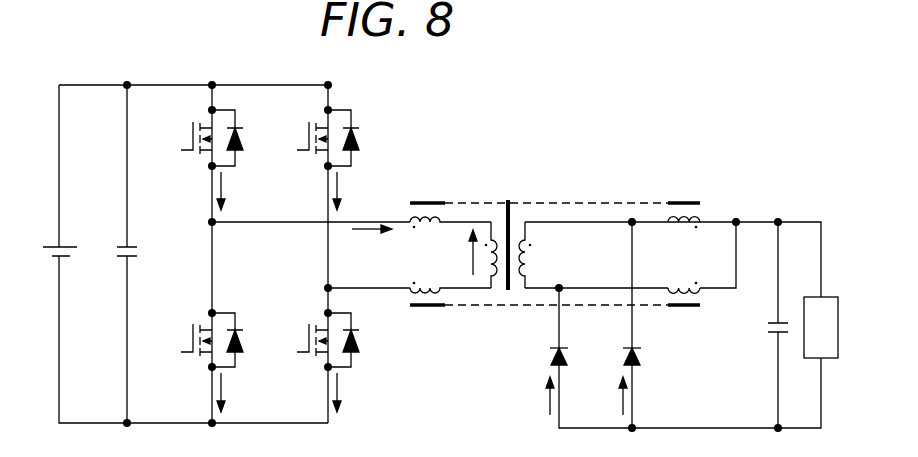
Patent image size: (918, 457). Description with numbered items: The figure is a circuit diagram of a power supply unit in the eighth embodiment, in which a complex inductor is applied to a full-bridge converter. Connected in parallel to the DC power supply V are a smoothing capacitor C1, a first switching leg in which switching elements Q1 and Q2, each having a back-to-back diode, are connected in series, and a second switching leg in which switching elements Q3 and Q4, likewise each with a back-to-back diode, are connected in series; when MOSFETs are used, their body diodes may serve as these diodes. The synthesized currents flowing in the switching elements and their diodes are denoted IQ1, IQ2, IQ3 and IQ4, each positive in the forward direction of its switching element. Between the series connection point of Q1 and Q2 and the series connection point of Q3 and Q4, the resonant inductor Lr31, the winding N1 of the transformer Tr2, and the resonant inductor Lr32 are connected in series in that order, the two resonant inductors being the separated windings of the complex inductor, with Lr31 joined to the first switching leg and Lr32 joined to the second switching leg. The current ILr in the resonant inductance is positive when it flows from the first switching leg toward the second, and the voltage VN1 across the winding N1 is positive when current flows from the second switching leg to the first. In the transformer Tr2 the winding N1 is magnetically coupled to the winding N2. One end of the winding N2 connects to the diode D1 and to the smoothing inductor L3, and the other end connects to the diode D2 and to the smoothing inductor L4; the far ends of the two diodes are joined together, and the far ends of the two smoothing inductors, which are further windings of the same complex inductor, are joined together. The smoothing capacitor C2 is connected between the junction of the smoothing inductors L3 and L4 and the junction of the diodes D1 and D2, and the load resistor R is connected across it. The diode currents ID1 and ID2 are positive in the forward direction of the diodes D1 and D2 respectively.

The DC power supply V is at (49, 251).
The smoothing capacitor C1 is at (141, 254).
The switching element Q1 is at (199, 138).
The switching element Q2 is at (199, 340).
The switching element Q3 is at (315, 138).
The switching element Q4 is at (315, 340).
The synthesized current IQ1 is at (239, 191).
The synthesized current IQ2 is at (238, 392).
The synthesized current IQ3 is at (354, 191).
The synthesized current IQ4 is at (354, 392).
The resonant inductor current ILr is at (372, 241).
The resonant inductor Lr31 is at (403, 199).
The resonant inductor Lr32 is at (404, 308).
The transformer Tr2 is at (504, 248).
The winding N1 is at (491, 291).
The winding N2 is at (525, 291).
The voltage across winding N1 VN1 is at (452, 252).
The smoothing inductor L3 is at (684, 226).
The smoothing inductor L4 is at (684, 283).
The diode D1 is at (544, 358).
The diode D2 is at (616, 358).
The diode current ID1 is at (534, 396).
The diode current ID2 is at (606, 396).
The smoothing capacitor C2 is at (763, 326).
The load resistor R is at (830, 327).